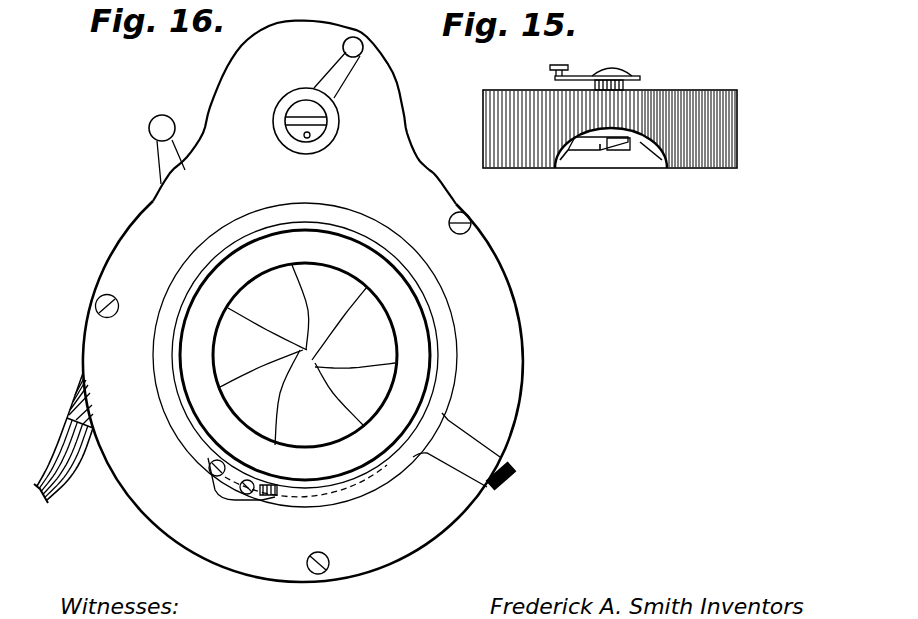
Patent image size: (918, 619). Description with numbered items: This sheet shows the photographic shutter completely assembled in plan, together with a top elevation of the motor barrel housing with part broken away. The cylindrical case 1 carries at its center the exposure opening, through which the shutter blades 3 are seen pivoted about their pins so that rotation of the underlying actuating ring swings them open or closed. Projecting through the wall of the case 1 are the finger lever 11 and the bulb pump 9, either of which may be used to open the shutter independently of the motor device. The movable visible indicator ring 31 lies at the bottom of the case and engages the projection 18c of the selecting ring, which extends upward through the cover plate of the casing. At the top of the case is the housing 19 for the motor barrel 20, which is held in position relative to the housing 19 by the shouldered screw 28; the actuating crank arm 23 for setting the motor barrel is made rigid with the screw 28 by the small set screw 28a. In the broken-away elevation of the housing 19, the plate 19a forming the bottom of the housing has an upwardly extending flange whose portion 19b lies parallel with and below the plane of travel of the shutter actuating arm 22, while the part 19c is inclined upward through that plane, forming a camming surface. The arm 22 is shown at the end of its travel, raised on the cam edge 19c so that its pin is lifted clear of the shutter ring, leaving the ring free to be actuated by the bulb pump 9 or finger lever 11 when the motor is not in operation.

In FIG. 16, the cylindrical case 1 is at (127, 218).
In FIG. 16, the shutter blades 3 is at (378, 342).
In FIG. 16, the bulb pump 9 is at (75, 397).
In FIG. 16, the finger lever 11 is at (160, 160).
In FIG. 16, the projection of selecting ring 18c is at (268, 497).
In FIG. 16, the housing 19 is at (233, 70).
In FIG. 15, the housing 19 is at (690, 93).
In FIG. 15, the plate 19a is at (650, 167).
In FIG. 15, the edge portion 19b is at (583, 153).
In FIG. 15, the inclined cam edge 19c is at (608, 155).
In FIG. 15, the motor barrel 20 is at (573, 147).
In FIG. 15, the shutter actuating arm 22 is at (625, 150).
In FIG. 16, the actuating crank arm 23 is at (342, 70).
In FIG. 15, the actuating crank arm 23 is at (573, 77).
In FIG. 16, the shouldered screw 28 is at (323, 112).
In FIG. 15, the shouldered screw 28 is at (617, 65).
In FIG. 16, the set screw 28a is at (323, 133).
In FIG. 16, the visible indicator ring 31 is at (350, 495).